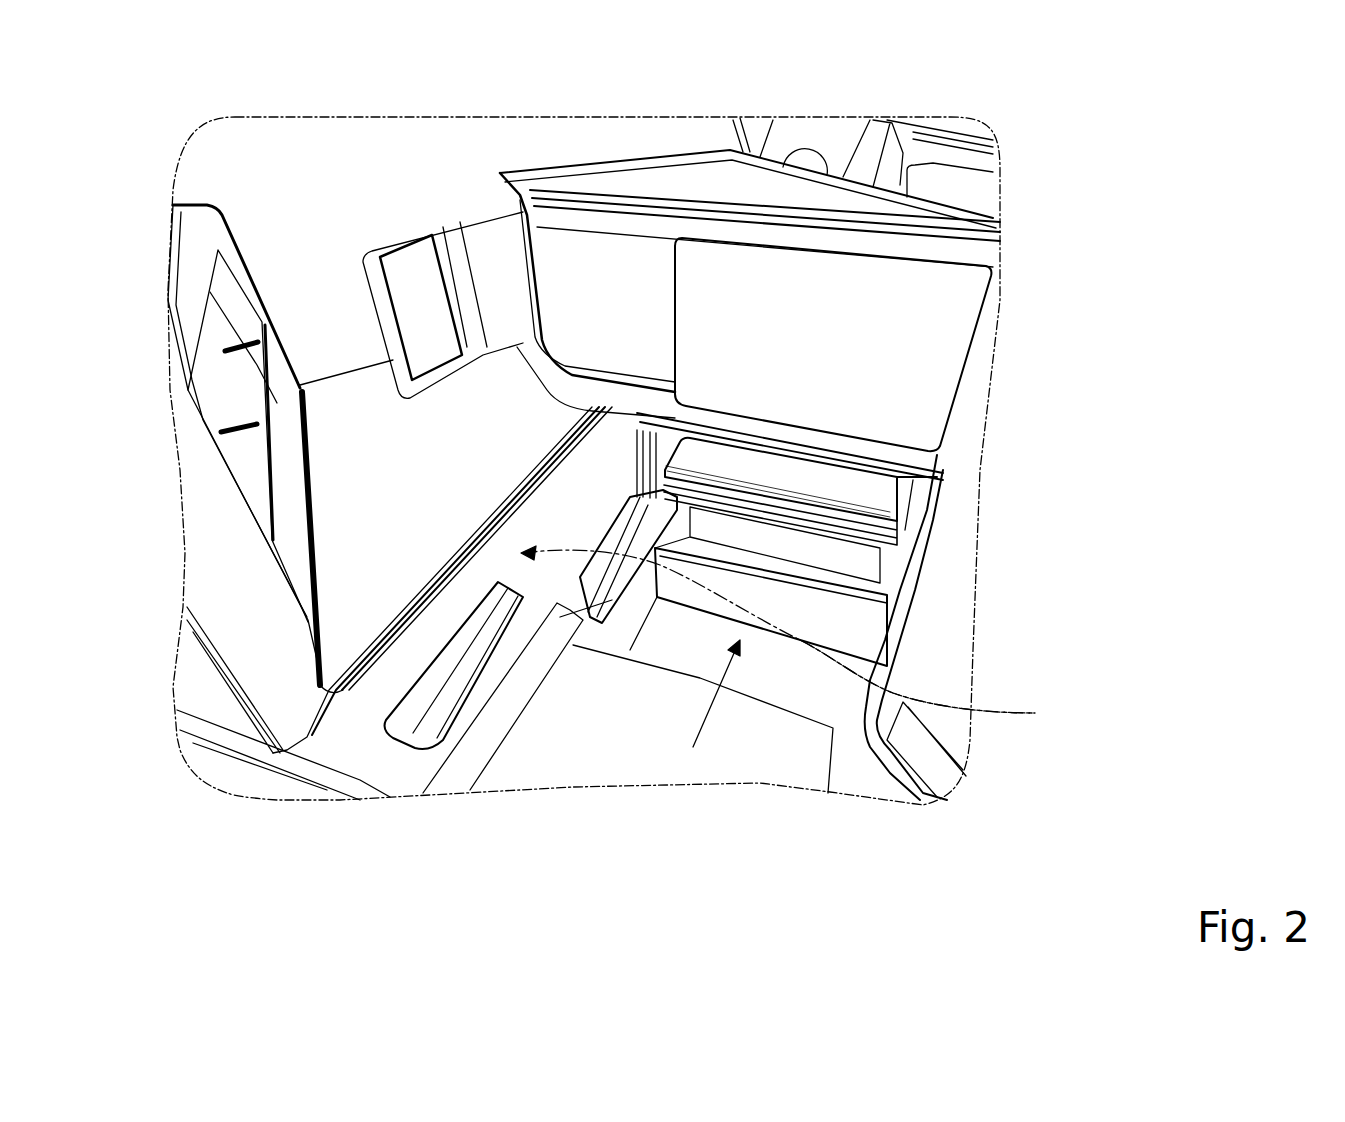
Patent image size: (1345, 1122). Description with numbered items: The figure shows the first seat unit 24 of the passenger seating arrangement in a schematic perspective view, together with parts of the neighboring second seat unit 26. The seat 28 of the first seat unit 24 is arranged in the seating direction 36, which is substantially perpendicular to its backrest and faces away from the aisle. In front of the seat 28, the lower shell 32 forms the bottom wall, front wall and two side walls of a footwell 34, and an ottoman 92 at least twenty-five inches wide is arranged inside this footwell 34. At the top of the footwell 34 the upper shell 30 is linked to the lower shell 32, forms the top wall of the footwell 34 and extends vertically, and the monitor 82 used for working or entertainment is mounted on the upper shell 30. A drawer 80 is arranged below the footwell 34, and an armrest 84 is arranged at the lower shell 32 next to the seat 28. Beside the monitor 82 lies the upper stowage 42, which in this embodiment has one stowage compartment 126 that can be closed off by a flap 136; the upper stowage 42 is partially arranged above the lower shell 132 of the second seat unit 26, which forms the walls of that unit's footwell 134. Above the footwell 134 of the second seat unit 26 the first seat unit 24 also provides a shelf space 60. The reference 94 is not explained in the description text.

The first seat unit 24 is at (1014, 188).
The second seat unit 26 is at (1113, 726).
The seat 28 is at (603, 723).
The upper shell 30 is at (962, 445).
The lower shell 32 is at (945, 595).
The footwell 34 is at (805, 481).
The seating direction 36 is at (717, 700).
The upper stowage 42 is at (617, 280).
The shelf space 60 is at (347, 430).
The drawer 80 is at (845, 623).
The monitor 82 is at (913, 353).
The armrest 84 is at (425, 708).
The ottoman 92 is at (843, 493).
The door display 94 is at (277, 403).
The stowage compartment 126 is at (567, 282).
The lower shell 132 is at (817, 640).
The footwell 134 is at (985, 687).
The flap 136 is at (447, 260).